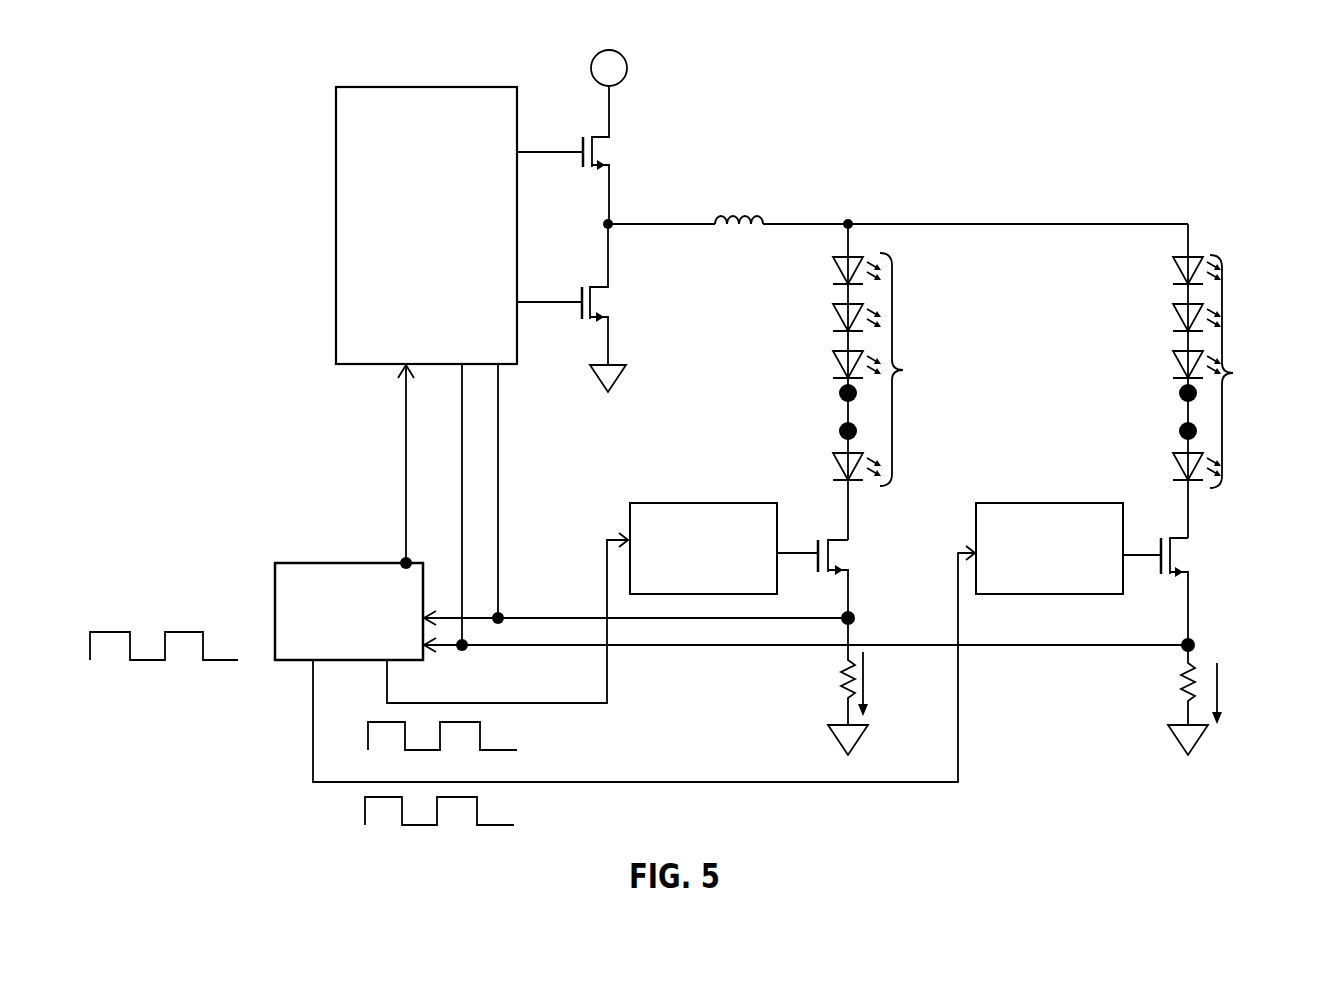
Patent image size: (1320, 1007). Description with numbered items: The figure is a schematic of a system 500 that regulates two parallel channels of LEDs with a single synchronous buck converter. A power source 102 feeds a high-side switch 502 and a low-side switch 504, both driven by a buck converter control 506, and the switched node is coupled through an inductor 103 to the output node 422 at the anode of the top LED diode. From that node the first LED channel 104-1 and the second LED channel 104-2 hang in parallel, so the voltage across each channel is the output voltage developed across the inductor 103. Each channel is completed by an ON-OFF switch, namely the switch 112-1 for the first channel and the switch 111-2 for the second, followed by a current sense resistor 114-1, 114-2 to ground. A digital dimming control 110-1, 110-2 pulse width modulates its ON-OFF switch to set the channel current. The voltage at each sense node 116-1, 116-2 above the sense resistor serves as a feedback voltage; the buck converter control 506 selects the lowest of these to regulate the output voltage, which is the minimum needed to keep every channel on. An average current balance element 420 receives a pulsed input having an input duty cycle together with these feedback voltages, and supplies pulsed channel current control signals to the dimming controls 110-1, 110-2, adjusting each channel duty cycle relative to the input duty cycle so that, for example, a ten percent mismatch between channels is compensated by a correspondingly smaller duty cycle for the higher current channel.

The system 500 is at (152, 110).
The power source 102 is at (628, 73).
The high-side (HS) switch 502 is at (615, 135).
The low-side (LS) switch 504 is at (615, 292).
The buck converter control 506 is at (404, 269).
The inductor 103 is at (737, 213).
The node 422 is at (855, 222).
The LED channel 104-1 is at (903, 370).
The LED channel 104-2 is at (1233, 373).
The digital dimming control 110-1 is at (678, 503).
The digital dimming control 110-2 is at (1025, 503).
The ON-OFF switch 112-1 is at (855, 543).
The ON-OFF switch channel 2 111-2 is at (1197, 543).
The feedback voltage node channel 1 116-1 is at (855, 615).
The feedback voltage node channel 2 116-2 is at (1197, 643).
The current sense resistor 114-1 is at (838, 690).
The current sense resistor 114-2 is at (1182, 691).
The average current balance element 420 is at (350, 563).